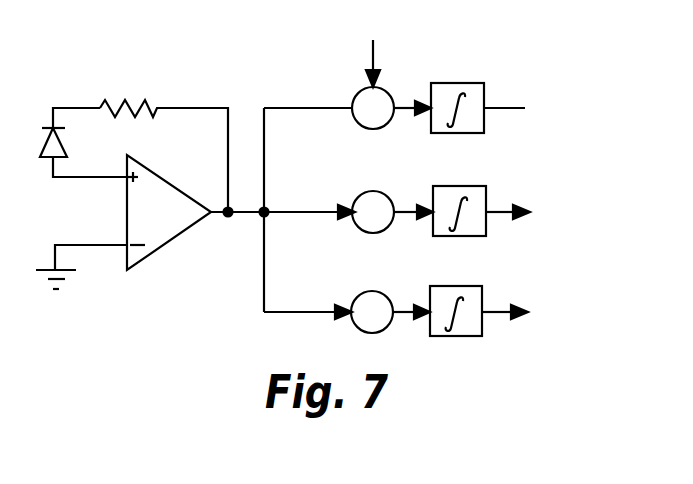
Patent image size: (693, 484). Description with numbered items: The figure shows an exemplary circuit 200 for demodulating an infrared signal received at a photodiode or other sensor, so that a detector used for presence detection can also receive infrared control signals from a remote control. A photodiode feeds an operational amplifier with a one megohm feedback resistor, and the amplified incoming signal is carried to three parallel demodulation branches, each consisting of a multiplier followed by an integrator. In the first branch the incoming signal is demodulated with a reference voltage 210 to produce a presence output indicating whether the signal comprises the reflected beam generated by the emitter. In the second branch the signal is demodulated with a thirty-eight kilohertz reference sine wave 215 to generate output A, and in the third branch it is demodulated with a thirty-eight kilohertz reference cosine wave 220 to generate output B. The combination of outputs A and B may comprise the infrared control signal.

The circuit 200 is at (262, 46).
The reference voltage 210 is at (388, 46).
The 38 kilohertz reference sine wave 215 is at (485, 167).
The 38 kilohertz reference cosine wave 220 is at (490, 270).